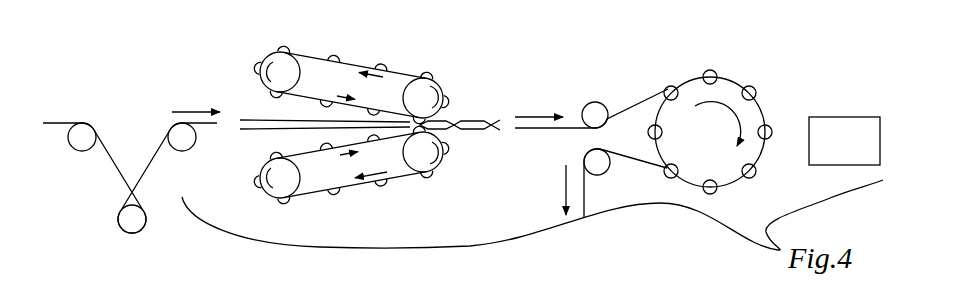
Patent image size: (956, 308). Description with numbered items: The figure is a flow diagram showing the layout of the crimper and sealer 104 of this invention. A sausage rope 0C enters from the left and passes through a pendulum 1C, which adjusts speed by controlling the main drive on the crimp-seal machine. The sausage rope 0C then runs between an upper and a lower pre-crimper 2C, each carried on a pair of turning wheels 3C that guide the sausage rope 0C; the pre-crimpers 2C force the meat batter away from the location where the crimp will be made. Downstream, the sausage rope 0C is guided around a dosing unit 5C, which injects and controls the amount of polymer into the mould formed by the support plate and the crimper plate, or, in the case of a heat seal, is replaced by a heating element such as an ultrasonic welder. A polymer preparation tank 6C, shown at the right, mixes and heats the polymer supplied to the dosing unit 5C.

The sausage rope 0C is at (57, 122).
The pendulum 1C is at (143, 119).
The pre-crimper 2C is at (370, 63).
The turning wheel 3C is at (408, 80).
The crimper and sealer 104 is at (368, 32).
The dosing unit 5C is at (729, 78).
The polymer preparation tank 6C is at (822, 117).